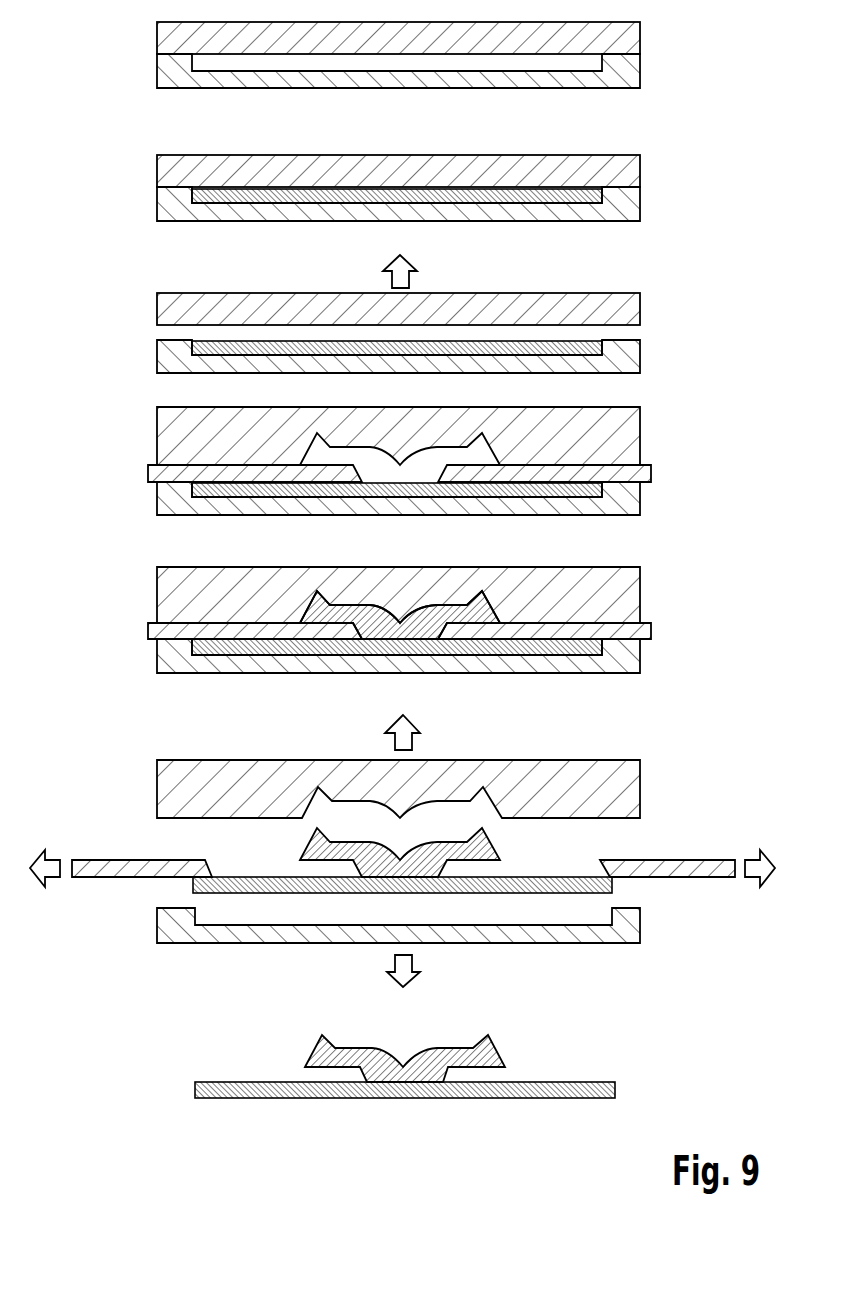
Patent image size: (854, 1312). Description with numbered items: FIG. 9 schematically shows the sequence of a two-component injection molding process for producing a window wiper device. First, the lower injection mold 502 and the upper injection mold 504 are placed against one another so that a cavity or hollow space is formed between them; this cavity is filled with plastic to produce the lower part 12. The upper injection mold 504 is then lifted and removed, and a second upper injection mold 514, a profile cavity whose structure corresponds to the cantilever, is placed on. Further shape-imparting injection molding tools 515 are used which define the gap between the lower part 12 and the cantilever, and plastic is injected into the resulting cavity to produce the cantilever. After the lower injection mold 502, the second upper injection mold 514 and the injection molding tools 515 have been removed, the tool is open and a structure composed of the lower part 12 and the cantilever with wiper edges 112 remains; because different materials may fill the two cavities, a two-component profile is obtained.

The upper injection mold 504 is at (641, 30).
The lower injection mold 502 is at (641, 62).
The lower part 12 is at (598, 191).
The second upper injection mold 514 is at (632, 452).
The injection molding tools 515 is at (630, 492).
The wiper edges 112 is at (490, 1037).